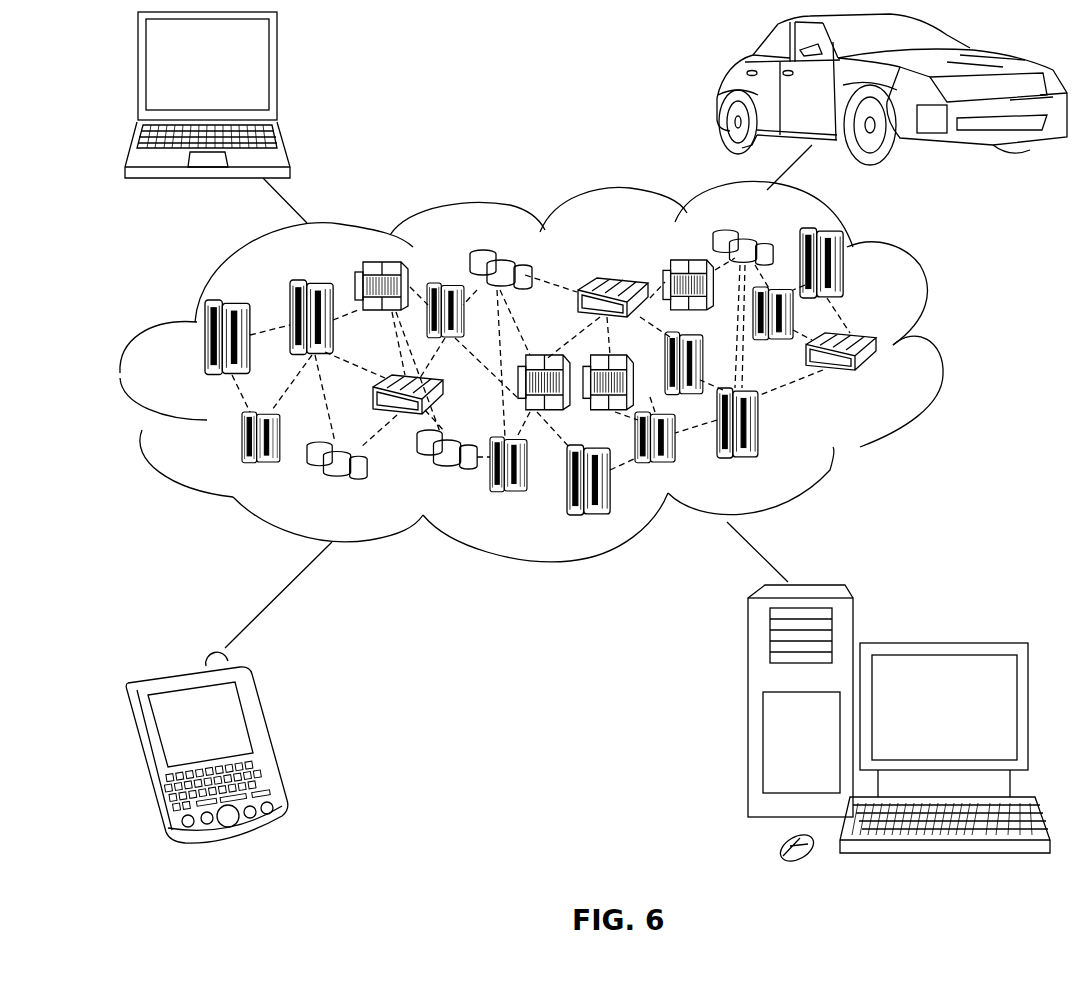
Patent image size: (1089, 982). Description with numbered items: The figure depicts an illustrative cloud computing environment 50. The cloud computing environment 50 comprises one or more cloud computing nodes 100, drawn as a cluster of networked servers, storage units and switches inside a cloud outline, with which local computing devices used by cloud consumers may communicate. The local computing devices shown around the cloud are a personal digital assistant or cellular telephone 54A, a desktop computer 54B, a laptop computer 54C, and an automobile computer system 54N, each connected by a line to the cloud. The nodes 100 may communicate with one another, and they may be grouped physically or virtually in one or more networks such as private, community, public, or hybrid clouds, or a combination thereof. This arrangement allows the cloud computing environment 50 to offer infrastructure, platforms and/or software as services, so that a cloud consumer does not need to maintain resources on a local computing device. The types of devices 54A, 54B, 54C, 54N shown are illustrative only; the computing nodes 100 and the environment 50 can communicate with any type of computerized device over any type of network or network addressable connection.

The cloud computing environment 50 is at (940, 350).
The personal digital assistant or cellular telephone 54A is at (267, 741).
The desktop computer 54B is at (940, 643).
The laptop computer 54C is at (277, 72).
The automobile computer system 54N is at (720, 95).
The cloud computing nodes 100 is at (880, 380).